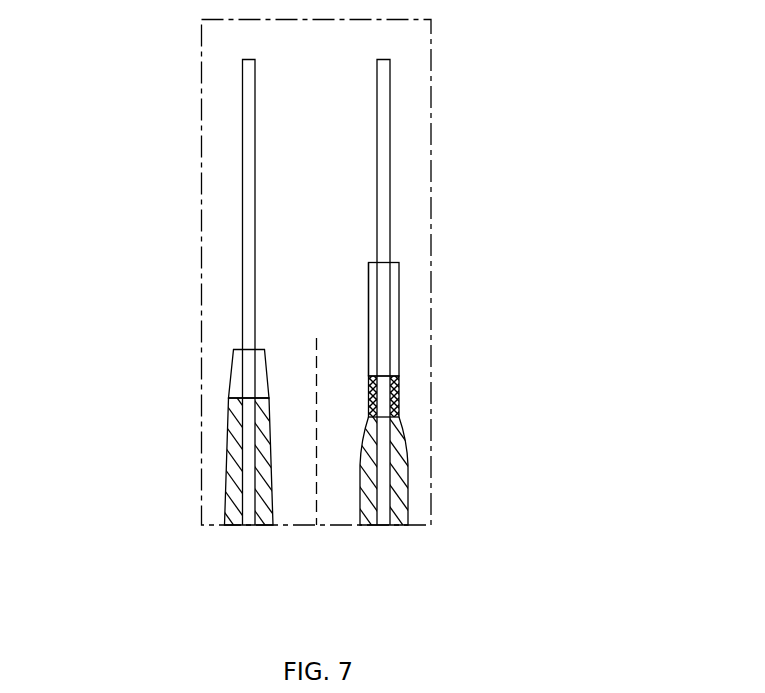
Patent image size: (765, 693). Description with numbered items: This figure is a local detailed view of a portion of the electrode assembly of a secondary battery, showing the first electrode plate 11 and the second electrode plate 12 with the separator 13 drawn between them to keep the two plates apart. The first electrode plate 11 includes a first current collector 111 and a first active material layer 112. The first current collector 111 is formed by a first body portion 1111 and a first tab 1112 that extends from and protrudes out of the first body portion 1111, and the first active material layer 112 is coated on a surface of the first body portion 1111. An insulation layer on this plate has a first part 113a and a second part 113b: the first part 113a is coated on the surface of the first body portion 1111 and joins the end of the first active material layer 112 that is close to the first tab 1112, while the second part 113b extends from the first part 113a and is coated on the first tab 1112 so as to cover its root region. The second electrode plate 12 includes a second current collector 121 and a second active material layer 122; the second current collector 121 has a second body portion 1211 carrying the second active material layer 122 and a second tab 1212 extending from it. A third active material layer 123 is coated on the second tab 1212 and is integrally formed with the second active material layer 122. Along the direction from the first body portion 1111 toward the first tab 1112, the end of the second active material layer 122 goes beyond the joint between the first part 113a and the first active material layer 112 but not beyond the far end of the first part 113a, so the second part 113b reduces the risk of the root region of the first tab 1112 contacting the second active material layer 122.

The first electrode plate 11 is at (555, 87).
The second electrode plate 12 is at (105, 254).
The separator 13 is at (316, 458).
The first current collector 111 is at (528, 370).
The first body portion 1111 is at (387, 472).
The first tab 1112 is at (383, 350).
The first active material layer 112 is at (367, 520).
The first part 113a is at (380, 392).
The second part 113b is at (373, 308).
The second current collector 121 is at (117, 335).
The second body portion 1211 is at (247, 441).
The second tab 1212 is at (250, 331).
The second active material layer 122 is at (232, 522).
The third active material layer 123 is at (263, 367).